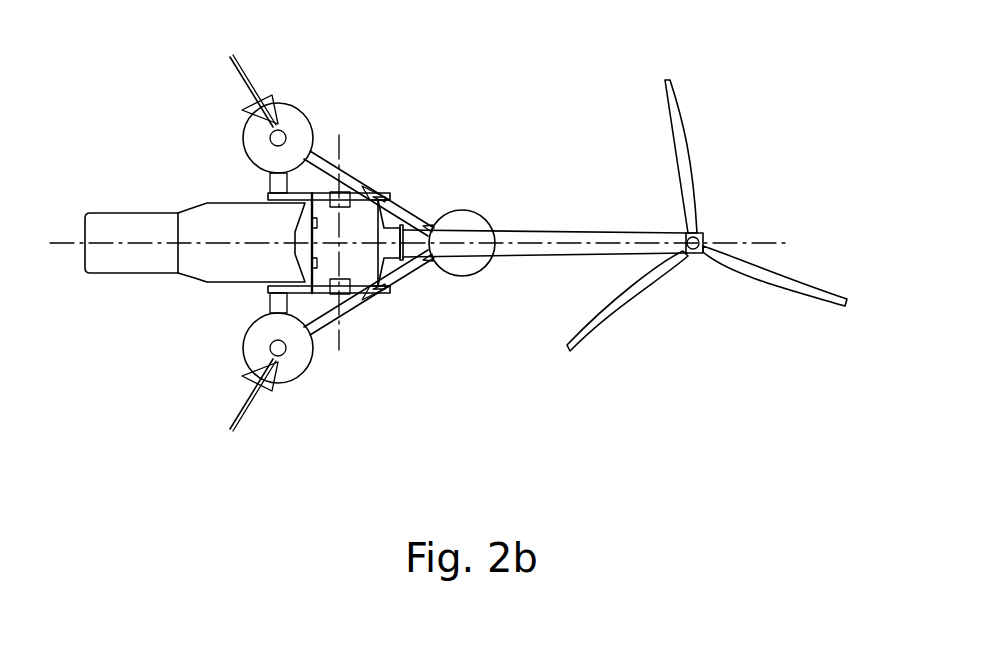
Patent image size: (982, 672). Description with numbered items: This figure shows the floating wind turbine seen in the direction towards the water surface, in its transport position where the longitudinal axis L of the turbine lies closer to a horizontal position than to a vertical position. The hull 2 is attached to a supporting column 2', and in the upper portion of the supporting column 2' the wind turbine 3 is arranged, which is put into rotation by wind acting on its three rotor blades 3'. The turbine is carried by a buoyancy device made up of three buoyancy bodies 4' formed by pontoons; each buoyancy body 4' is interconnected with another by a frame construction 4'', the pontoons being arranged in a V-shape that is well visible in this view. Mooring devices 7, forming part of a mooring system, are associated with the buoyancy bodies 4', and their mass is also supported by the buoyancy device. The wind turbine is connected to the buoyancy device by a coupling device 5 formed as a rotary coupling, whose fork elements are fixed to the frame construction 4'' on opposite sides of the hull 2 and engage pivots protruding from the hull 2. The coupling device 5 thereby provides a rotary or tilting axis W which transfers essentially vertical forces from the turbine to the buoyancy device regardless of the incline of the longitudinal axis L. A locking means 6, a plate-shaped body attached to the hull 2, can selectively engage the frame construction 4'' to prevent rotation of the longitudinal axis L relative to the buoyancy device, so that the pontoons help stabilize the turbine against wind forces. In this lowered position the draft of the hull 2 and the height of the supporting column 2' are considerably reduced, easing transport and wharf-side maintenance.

The hull 2 is at (195, 302).
The supporting column 2' is at (545, 196).
The wind turbine 3 is at (700, 290).
The rotor blades 3' is at (707, 215).
The buoyancy bodies 4' is at (300, 287).
The frame construction 4'' is at (394, 202).
The coupling device 5 is at (357, 313).
The locking means 6 is at (293, 238).
The mooring devices 7 is at (247, 78).
The rotary or tilting axis W is at (340, 133).
The longitudinal axis L is at (775, 243).